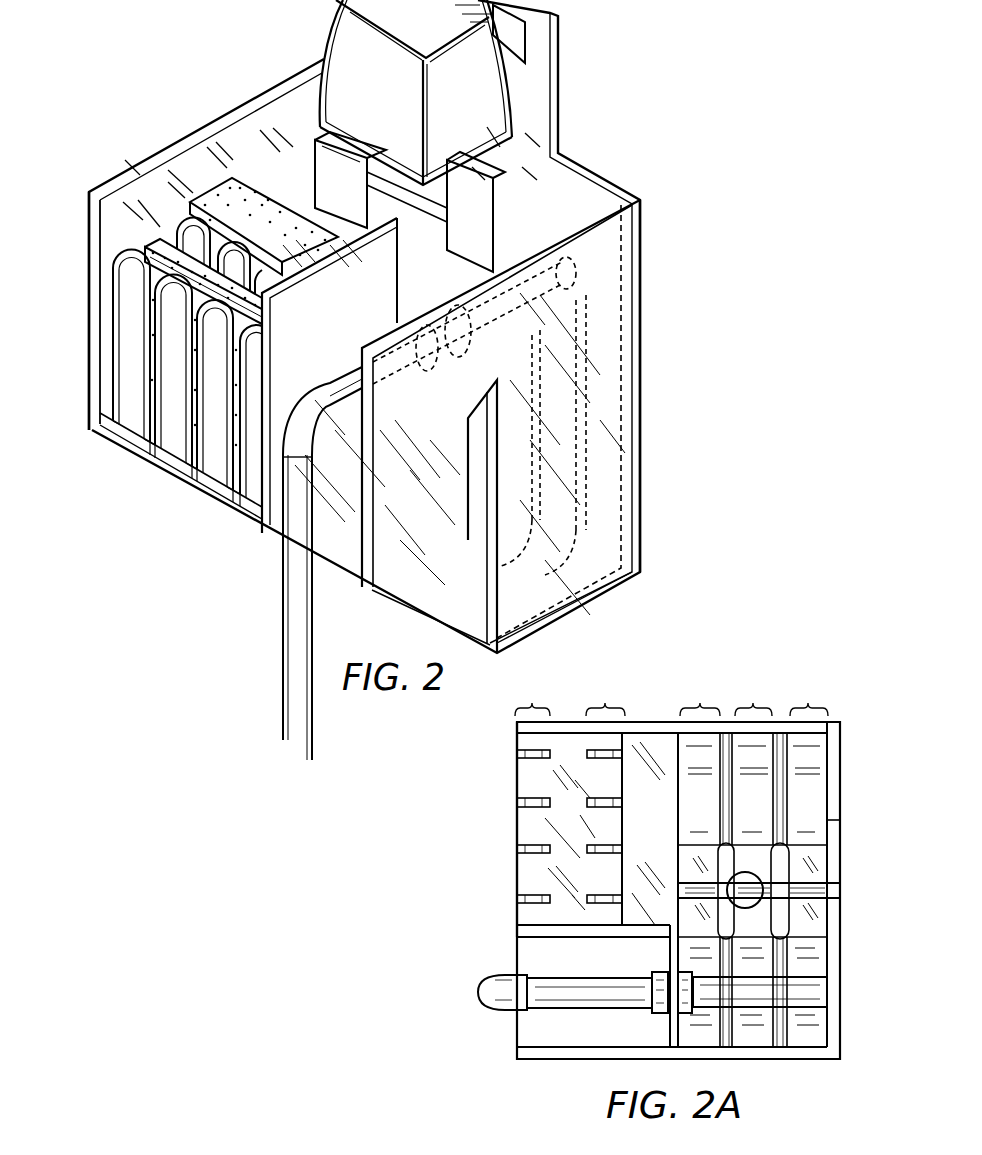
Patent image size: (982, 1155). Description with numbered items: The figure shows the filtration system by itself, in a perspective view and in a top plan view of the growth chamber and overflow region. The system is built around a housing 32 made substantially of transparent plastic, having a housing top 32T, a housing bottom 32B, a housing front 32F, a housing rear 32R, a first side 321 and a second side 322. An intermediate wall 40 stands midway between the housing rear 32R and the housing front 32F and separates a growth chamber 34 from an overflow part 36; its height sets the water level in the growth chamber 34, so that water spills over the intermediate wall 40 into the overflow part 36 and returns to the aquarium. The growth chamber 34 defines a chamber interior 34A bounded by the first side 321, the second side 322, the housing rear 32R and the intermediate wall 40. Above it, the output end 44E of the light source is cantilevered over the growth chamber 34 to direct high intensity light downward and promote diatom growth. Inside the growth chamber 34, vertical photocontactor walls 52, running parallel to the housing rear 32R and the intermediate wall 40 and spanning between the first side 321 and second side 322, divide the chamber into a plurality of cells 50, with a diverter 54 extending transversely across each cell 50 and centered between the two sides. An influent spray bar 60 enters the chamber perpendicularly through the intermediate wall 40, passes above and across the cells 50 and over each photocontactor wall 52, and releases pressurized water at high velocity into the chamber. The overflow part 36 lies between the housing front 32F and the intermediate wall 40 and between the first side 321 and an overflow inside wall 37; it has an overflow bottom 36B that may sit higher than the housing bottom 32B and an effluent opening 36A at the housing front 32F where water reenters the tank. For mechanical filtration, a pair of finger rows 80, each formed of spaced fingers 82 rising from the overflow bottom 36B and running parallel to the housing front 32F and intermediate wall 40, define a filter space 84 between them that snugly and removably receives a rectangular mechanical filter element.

In FIG. 2, the housing 32 is at (642, 542).
In FIG. 2A, the housing 32 is at (541, 1062).
In FIG. 2, the housing top 32T is at (262, 98).
In FIG. 2, the housing front 32F is at (93, 323).
In FIG. 2A, the housing front 32F is at (517, 932).
In FIG. 2, the housing rear 32R is at (642, 245).
In FIG. 2A, the housing rear 32R is at (836, 778).
In FIG. 2, the housing bottom 32B is at (585, 596).
In FIG. 2, the first side 321 is at (130, 165).
In FIG. 2, the second side 322 is at (600, 228).
In FIG. 2, the growth chamber 34 is at (292, 105).
In FIG. 2A, the growth chamber 34 is at (800, 1040).
In FIG. 2, the chamber interior 34A is at (548, 192).
In FIG. 2, the overflow part 36 is at (160, 155).
In FIG. 2, the effluent opening 36A is at (138, 448).
In FIG. 2, the overflow bottom 36B is at (183, 457).
In FIG. 2, the overflow inside wall 37 is at (370, 507).
In FIG. 2A, the overflow inside wall 37 is at (535, 940).
In FIG. 2, the intermediate wall 40 is at (473, 250).
In FIG. 2A, the intermediate wall 40 is at (672, 955).
In FIG. 2, the output end 44E is at (500, 148).
In FIG. 2A, the cells 50 is at (753, 854).
In FIG. 2, the photocontactor walls 52 is at (540, 410).
In FIG. 2A, the photocontactor walls 52 is at (733, 793).
In FIG. 2A, the diverter 54 is at (815, 885).
In FIG. 2, the influent spray bar 60 is at (322, 563).
In FIG. 2A, the influent spray bar 60 is at (810, 975).
In FIG. 2A, the finger rows 80 is at (570, 700).
In FIG. 2, the fingers 82 is at (152, 382).
In FIG. 2A, the fingers 82 is at (602, 757).
In FIG. 2A, the filter space 84 is at (567, 740).